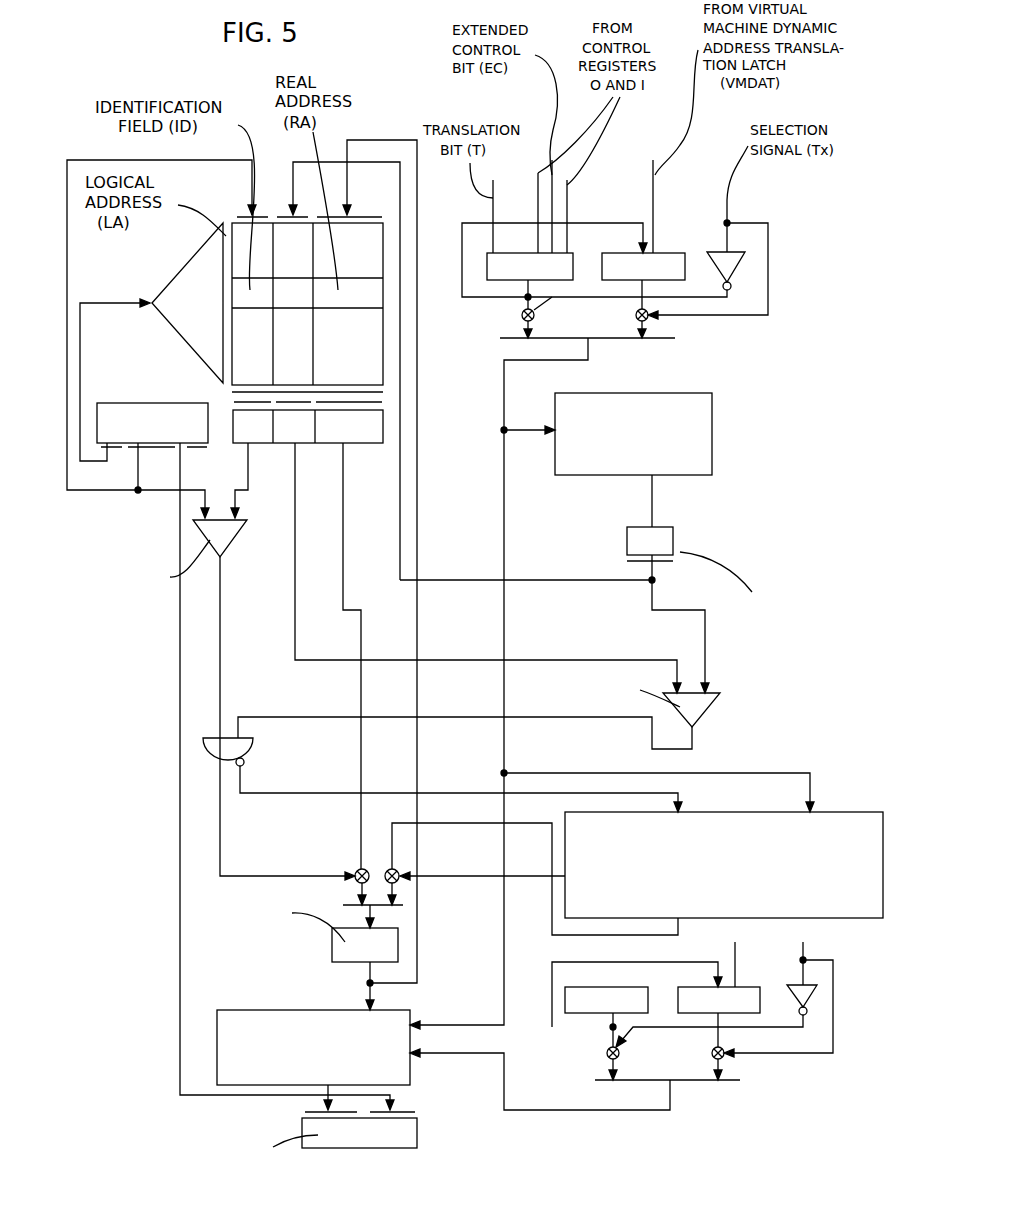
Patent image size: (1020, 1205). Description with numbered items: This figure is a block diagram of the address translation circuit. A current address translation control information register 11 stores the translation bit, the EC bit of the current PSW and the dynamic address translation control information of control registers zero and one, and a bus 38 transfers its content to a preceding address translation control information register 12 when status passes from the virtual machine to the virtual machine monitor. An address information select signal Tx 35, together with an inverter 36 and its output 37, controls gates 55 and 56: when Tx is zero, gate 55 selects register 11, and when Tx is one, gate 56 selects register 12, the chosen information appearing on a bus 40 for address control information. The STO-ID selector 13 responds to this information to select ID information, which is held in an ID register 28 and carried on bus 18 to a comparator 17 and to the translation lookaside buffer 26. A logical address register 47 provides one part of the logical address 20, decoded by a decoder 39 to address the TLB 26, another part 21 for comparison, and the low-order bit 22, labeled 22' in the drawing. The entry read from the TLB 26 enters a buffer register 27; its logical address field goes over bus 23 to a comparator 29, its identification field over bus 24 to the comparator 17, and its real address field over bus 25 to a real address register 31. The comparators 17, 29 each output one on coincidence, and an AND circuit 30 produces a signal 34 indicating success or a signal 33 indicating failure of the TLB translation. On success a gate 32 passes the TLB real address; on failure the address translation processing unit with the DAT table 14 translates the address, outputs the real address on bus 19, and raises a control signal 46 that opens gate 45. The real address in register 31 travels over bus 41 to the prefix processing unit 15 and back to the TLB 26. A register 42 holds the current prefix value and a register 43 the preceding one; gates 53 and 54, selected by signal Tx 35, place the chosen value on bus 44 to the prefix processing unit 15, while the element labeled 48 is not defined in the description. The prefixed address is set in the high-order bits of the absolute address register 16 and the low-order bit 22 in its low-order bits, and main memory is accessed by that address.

The current address translation control information register 11 is at (523, 253).
The preceding address translation control information register 12 is at (667, 253).
The segment table origin identification (STO-ID) selector 13 is at (712, 420).
The address translation processing unit with DAT table 14 is at (690, 802).
The prefix processing unit 15 is at (410, 1068).
The absolute address register 16 is at (417, 1130).
The comparator 17 is at (710, 713).
The bus 18 is at (655, 572).
The bus 19 is at (470, 826).
The one part of the logical address 20 is at (95, 463).
The one part of the logical address 21 is at (138, 452).
The low-order bit of the logical address 22 is at (287, 776).
The low-order bit of the logical address 22' is at (287, 776).
The bus 23 is at (250, 452).
The bus 24 is at (296, 452).
The bus 25 is at (345, 452).
The translation lookaside buffer (TLB) 26 is at (383, 258).
The buffer register 27 is at (383, 425).
The ID register 28 is at (673, 540).
The comparator 29 is at (238, 532).
The AND circuit 30 is at (253, 745).
The real address register 31 is at (332, 940).
The gate 32 is at (357, 869).
The translation failure signal 33 is at (240, 778).
The translation success signal 34 is at (222, 838).
The address information select signal (Tx) 35 is at (735, 205).
The inverter 36 is at (737, 278).
The inverter output 37 is at (703, 1028).
The bus 38 is at (620, 223).
The decoder 39 is at (185, 266).
The bus 40 is at (588, 355).
The bus 41 is at (362, 968).
The prefix register 42 is at (600, 987).
The preceding prefix register 43 is at (740, 987).
The bus 44 is at (625, 1110).
The gate 45 is at (389, 868).
The control signal 46 is at (470, 880).
The logical address register 47 is at (158, 403).
The line 48 is at (668, 962).
The gate 53 is at (605, 1053).
The gate 54 is at (724, 1060).
The gate 55 is at (521, 316).
The gate 56 is at (636, 316).